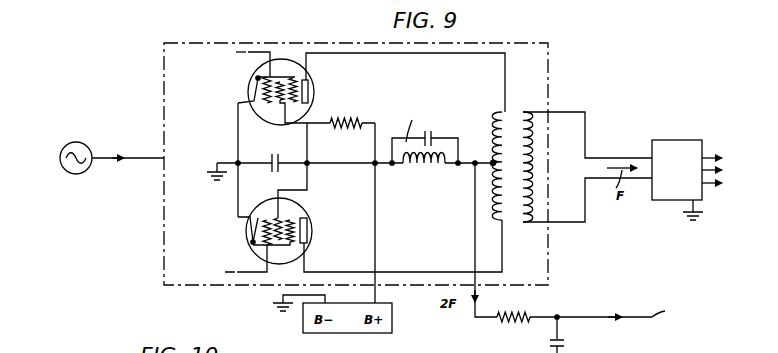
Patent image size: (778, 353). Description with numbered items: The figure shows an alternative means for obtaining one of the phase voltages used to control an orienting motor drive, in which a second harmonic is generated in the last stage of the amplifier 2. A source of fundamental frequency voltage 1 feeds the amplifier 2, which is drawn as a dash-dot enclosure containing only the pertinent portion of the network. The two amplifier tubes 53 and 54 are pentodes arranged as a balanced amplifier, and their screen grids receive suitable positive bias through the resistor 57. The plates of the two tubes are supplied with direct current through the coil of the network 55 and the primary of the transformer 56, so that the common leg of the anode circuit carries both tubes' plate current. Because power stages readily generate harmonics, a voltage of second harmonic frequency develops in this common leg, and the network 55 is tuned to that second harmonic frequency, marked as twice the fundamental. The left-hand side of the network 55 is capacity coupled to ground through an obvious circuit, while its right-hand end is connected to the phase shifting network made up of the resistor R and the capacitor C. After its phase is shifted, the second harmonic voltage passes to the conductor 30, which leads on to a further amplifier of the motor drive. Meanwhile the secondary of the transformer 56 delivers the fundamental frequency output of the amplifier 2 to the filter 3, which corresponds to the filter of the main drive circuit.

The source of fundamental frequency voltage 1 is at (87, 143).
The amplifier 2 is at (549, 62).
The filter 3 is at (678, 140).
The amplifier tube 53 is at (311, 79).
The amplifier tube 54 is at (308, 246).
The network 55 is at (438, 170).
The transformer 56 is at (508, 223).
The resistor 57 is at (341, 112).
The conductor 30 is at (640, 316).
The resistor R is at (505, 321).
The capacitor C is at (566, 343).